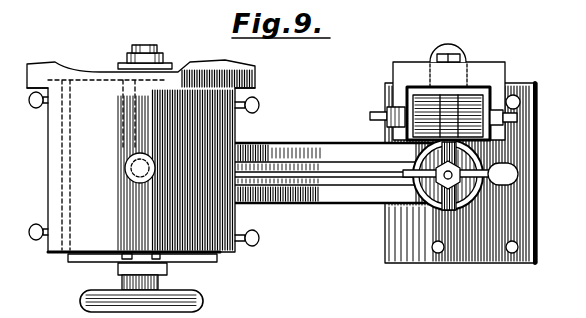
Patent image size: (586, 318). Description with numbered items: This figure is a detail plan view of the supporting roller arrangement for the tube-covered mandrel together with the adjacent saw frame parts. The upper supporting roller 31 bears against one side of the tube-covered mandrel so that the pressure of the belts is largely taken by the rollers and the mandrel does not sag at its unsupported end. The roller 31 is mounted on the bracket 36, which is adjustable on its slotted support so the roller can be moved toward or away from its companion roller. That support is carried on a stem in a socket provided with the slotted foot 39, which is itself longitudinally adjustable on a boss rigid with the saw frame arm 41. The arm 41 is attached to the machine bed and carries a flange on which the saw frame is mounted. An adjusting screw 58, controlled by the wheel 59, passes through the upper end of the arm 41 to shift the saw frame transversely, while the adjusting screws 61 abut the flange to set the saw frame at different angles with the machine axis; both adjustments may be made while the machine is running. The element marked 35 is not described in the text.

The upper supporting roller 31 is at (405, 128).
The dome cap 35 is at (467, 57).
The bracket 36 is at (405, 78).
The slotted foot 39 is at (413, 195).
The saw frame arm 41 is at (321, 143).
The adjusting screw 58 is at (168, 267).
The wheel 59 is at (200, 293).
The adjusting screws 61 is at (32, 107).